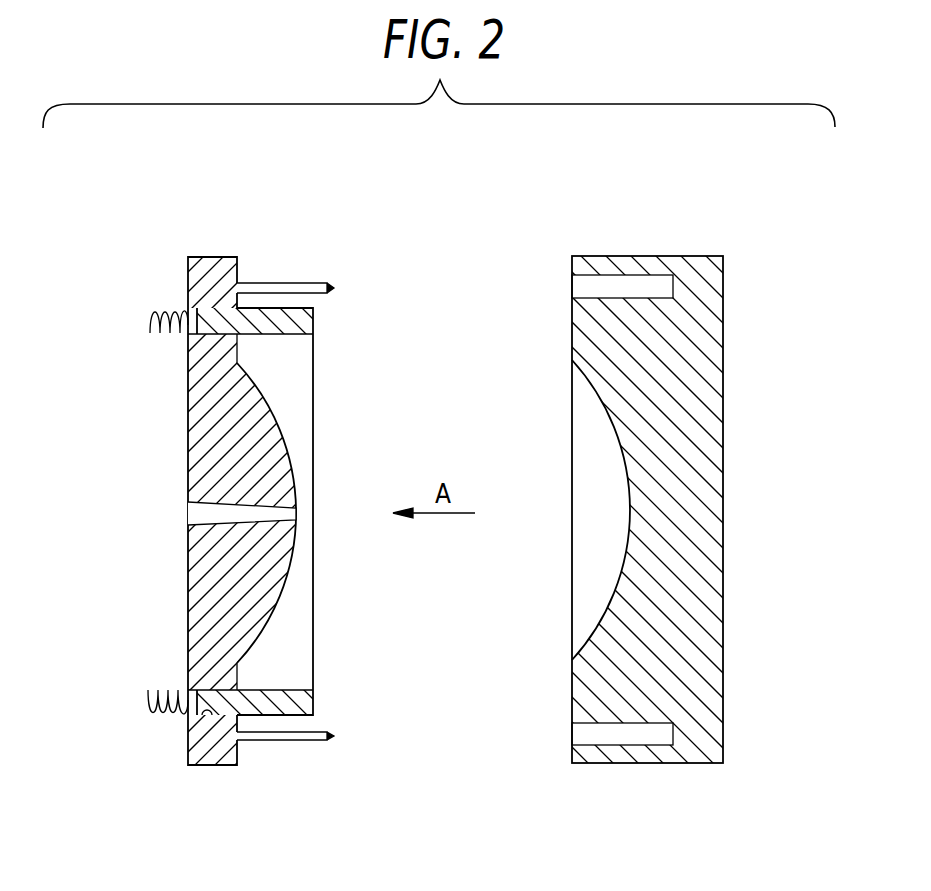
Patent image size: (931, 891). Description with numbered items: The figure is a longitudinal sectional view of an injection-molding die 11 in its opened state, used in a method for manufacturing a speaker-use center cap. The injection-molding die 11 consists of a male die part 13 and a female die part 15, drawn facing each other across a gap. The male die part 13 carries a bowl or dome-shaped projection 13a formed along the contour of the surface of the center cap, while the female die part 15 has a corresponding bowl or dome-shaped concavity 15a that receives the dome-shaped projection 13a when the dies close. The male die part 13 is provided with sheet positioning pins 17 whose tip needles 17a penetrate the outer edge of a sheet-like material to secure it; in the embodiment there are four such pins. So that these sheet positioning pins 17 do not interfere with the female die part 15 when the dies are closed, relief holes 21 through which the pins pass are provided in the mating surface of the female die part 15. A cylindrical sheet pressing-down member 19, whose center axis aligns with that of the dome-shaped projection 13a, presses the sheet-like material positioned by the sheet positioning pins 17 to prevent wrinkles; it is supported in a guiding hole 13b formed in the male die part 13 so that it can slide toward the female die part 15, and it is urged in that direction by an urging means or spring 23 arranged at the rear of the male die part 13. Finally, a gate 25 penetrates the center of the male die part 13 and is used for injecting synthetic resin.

The injection-molding die 11 is at (604, 238).
The male die part 13 is at (188, 567).
The dome-shaped projection 13a is at (296, 603).
The guiding hole 13b is at (188, 735).
The female die part 15 is at (485, 508).
The dome-shaped concavity 15a is at (620, 575).
The sheet positioning pins 17 is at (280, 818).
The tip needles 17a is at (345, 818).
The sheet pressing-down member 19 is at (299, 690).
The relief holes 21 is at (652, 738).
The urging means (spring) 23 is at (148, 690).
The gate 25 is at (188, 517).